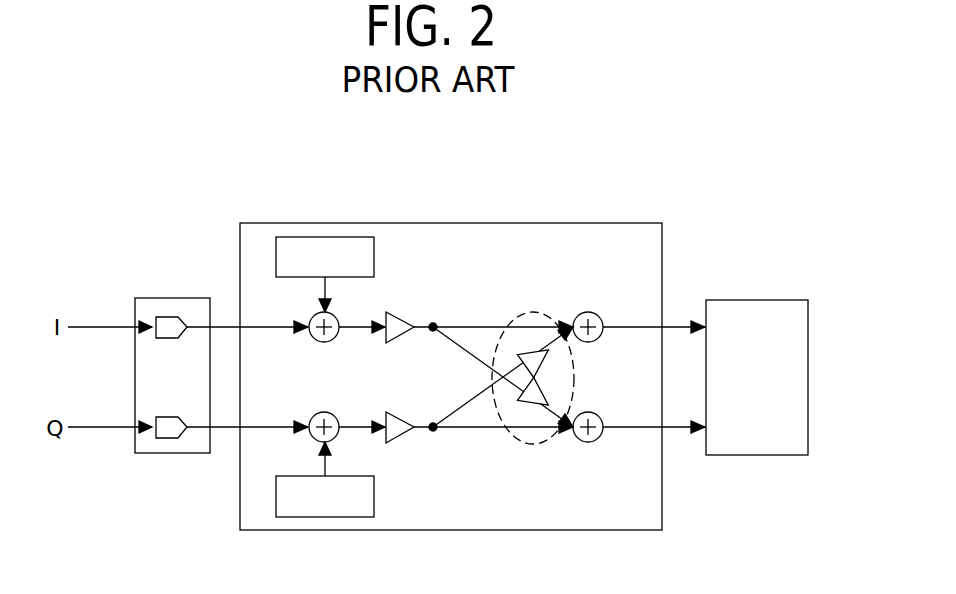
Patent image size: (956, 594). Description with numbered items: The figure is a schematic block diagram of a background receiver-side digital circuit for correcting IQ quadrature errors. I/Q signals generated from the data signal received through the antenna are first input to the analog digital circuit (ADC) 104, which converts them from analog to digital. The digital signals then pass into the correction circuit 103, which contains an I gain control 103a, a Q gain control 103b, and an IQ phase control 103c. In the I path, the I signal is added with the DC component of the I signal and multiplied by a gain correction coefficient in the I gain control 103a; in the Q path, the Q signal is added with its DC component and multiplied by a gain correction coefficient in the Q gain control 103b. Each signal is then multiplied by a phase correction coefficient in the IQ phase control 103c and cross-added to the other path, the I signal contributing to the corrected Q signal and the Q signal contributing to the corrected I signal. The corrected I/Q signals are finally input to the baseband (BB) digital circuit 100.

The baseband digital circuit 100 is at (777, 456).
The correction circuit 103 is at (451, 355).
The I gain control 103a is at (404, 343).
The Q gain control 103b is at (404, 443).
The IQ phase control 103c is at (522, 443).
The analog digital circuit 104 is at (185, 298).